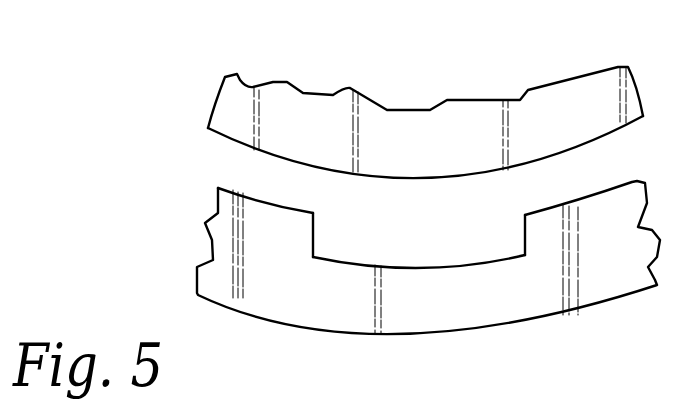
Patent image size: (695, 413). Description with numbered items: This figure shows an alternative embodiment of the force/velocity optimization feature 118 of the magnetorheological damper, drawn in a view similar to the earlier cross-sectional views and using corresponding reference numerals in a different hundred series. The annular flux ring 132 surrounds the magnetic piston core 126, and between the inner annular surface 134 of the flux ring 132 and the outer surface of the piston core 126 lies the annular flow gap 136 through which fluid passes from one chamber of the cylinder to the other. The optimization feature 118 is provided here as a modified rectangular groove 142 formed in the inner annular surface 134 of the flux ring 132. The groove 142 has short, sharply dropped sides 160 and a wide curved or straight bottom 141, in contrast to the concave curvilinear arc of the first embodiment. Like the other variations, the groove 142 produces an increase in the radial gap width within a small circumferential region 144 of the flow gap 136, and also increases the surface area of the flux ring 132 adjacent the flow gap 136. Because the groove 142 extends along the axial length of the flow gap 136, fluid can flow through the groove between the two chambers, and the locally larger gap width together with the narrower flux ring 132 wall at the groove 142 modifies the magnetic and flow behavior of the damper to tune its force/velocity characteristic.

The force/velocity optimization feature 118 is at (257, 150).
The piston core 126 is at (327, 128).
The flux ring 132 is at (267, 270).
The inner annular surface of flux ring 134 is at (386, 206).
The annular flow gap 136 is at (300, 192).
The bottom of groove 141 is at (477, 260).
The modified rectangular groove 142 is at (408, 252).
The small circumferential region of gap 144 is at (410, 200).
The sides of groove 160 is at (312, 230).